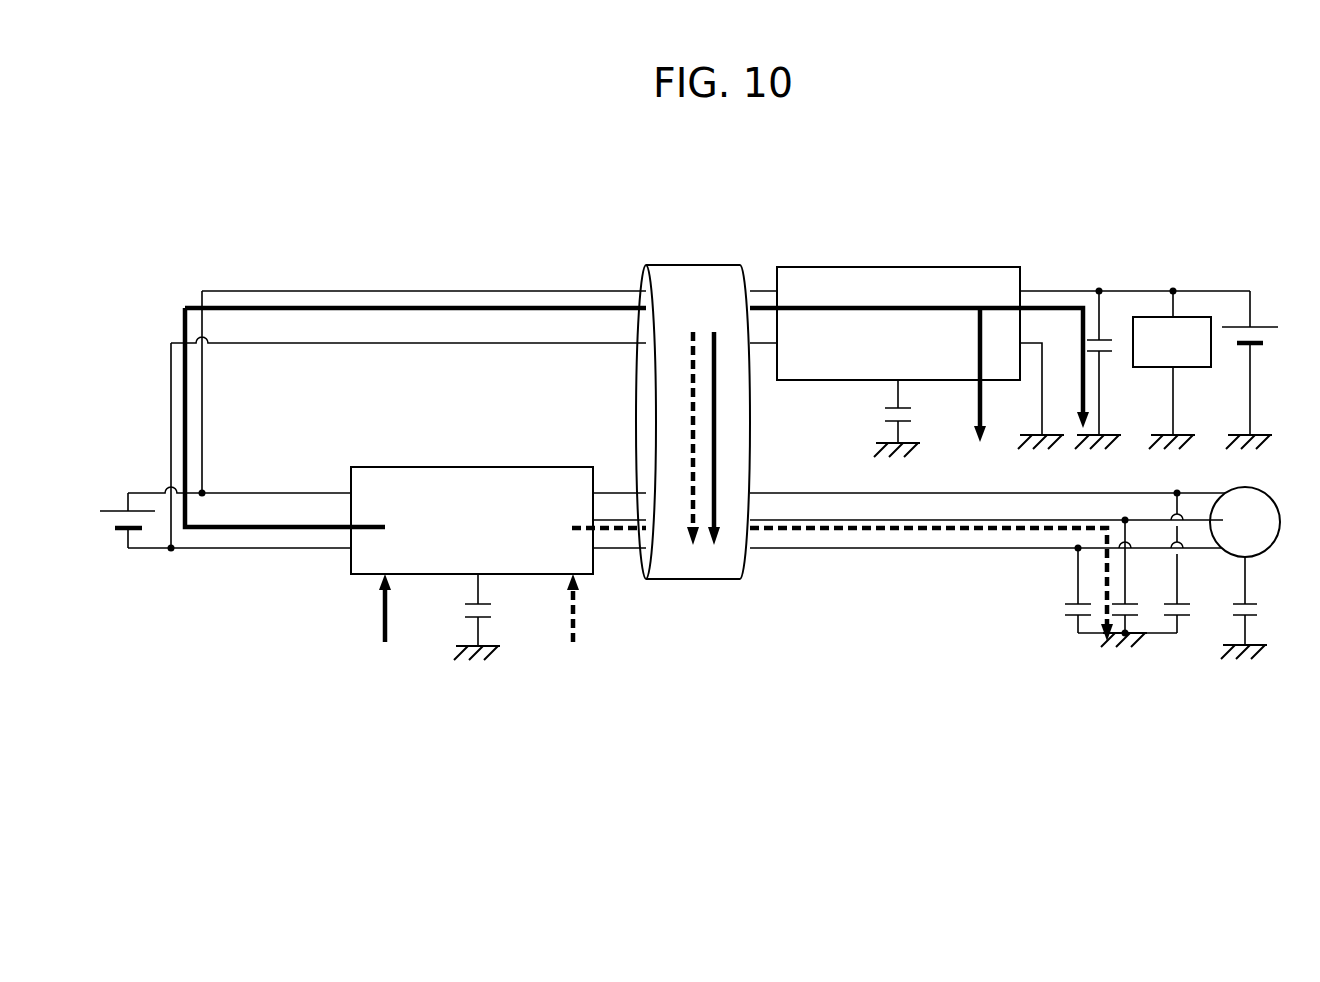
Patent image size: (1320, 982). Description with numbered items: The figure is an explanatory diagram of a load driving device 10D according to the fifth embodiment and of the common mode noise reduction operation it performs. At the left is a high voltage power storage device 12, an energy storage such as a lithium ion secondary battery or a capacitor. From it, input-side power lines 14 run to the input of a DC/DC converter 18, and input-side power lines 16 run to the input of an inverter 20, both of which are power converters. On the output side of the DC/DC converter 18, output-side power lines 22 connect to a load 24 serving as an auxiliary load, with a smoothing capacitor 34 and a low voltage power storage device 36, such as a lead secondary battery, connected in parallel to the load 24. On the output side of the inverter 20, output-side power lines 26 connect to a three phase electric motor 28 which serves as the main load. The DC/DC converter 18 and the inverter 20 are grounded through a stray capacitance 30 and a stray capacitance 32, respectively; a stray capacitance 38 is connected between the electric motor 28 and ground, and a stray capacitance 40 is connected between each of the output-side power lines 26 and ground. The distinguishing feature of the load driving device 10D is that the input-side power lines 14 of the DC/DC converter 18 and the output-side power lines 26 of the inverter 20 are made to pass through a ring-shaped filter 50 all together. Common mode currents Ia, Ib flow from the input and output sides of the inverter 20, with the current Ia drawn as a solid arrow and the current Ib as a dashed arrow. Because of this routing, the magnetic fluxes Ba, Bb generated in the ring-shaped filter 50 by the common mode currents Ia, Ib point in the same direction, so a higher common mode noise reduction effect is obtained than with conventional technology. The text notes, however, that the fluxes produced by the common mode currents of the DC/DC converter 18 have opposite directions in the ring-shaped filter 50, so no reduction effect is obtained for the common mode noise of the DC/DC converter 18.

The load driving device 10D is at (825, 168).
The high voltage power storage device 12 is at (115, 518).
The input-side power lines 14 is at (230, 352).
The input-side power lines 16 is at (257, 555).
The DC/DC converter 18 is at (946, 267).
The inverter 20 is at (466, 467).
The output-side power lines 22 is at (1025, 352).
The load 24 is at (1186, 368).
The output-side power lines 26 is at (785, 555).
The three phase electric motor 28 is at (1244, 486).
The stray capacitance 30 is at (911, 415).
The stray capacitance 32 is at (492, 611).
The smoothing capacitor 34 is at (1116, 347).
The low voltage power storage device 36 is at (1267, 333).
The stray capacitance 38 is at (1258, 607).
The stray capacitance 40 is at (1063, 611).
The ring-shaped filter 50 is at (702, 266).
The common mode current Ia is at (305, 530).
The common mode current Ib is at (575, 627).
The magnetic flux Ba is at (718, 418).
The magnetic flux Bb is at (690, 408).